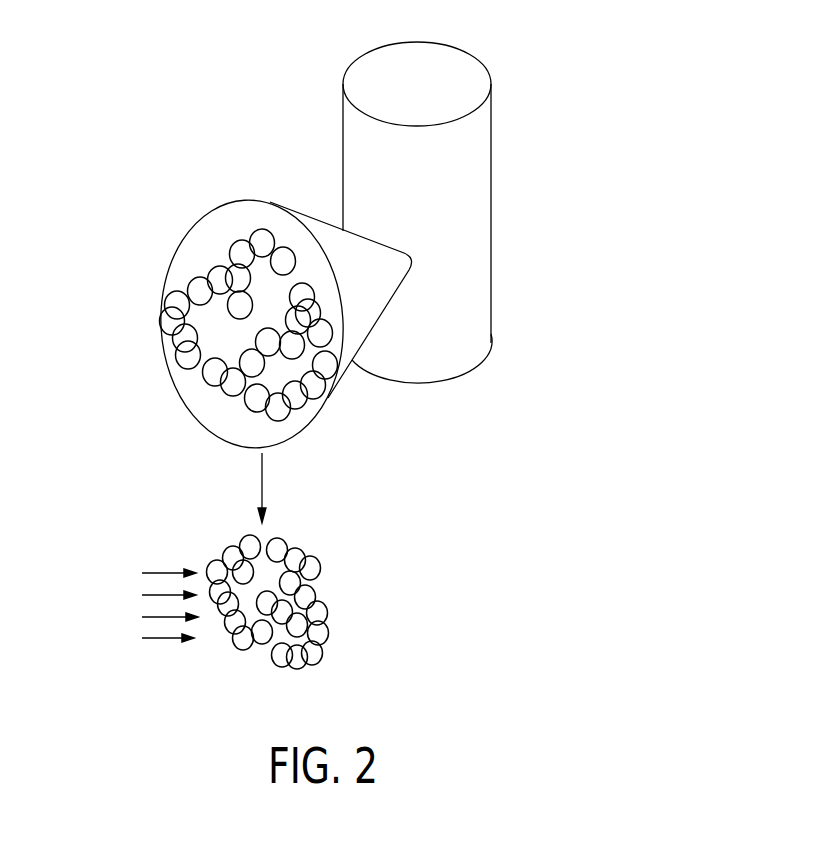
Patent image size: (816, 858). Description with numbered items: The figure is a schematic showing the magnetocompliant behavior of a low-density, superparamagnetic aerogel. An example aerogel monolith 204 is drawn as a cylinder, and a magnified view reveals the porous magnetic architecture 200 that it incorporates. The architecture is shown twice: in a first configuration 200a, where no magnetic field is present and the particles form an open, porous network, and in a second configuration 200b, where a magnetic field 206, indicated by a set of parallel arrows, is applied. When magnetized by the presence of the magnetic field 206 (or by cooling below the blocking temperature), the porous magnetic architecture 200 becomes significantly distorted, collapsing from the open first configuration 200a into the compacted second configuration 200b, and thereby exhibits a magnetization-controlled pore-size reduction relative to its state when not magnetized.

The porous magnetic architecture 200 is at (245, 449).
The first configuration 200a is at (170, 352).
The second configuration 200b is at (323, 605).
The aerogel monolith 204 is at (478, 216).
The magnetic field 206 is at (158, 640).